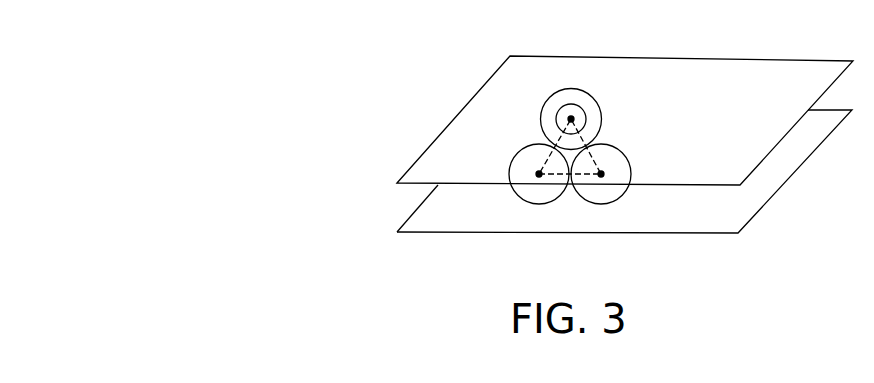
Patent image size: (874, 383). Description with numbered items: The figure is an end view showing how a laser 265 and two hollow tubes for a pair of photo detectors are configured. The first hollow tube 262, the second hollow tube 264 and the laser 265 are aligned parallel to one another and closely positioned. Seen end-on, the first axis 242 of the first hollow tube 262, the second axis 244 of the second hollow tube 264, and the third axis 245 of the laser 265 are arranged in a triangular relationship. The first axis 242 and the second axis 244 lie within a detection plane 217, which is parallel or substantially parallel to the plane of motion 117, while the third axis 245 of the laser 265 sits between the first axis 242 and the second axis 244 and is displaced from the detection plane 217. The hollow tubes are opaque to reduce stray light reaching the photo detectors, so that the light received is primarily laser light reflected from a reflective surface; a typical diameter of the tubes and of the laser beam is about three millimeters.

The plane of motion 117 is at (416, 210).
The detection plane 217 is at (397, 181).
The first axis 242 is at (619, 153).
The second axis 244 is at (538, 172).
The third axis 245 is at (572, 116).
The first hollow tube 262 is at (601, 174).
The second hollow tube 264 is at (511, 161).
The laser 265 is at (565, 106).